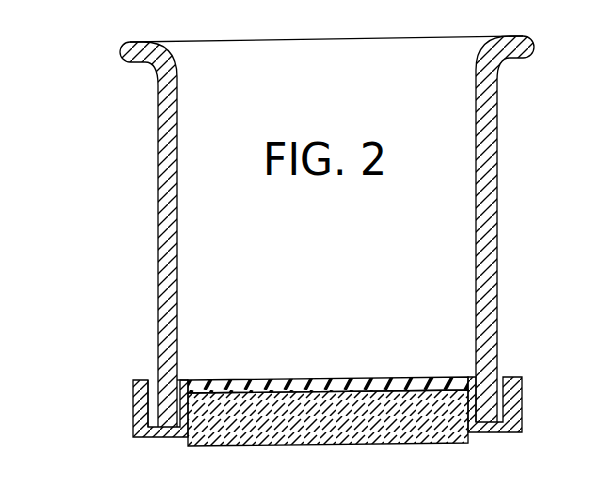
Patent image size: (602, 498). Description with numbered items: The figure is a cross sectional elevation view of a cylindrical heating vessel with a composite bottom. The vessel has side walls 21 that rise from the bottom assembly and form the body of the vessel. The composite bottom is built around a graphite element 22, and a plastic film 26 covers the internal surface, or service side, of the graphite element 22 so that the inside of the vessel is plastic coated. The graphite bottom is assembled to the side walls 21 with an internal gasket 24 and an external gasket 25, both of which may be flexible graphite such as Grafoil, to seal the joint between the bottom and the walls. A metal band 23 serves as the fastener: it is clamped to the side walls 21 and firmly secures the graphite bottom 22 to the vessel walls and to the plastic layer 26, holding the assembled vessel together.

The vessel side wall 21 is at (155, 245).
The graphite element 22 is at (279, 447).
The metal band 23 is at (132, 402).
The internal gasket 24 is at (184, 377).
The external gasket 25 is at (156, 384).
The plastic film 26 is at (292, 376).